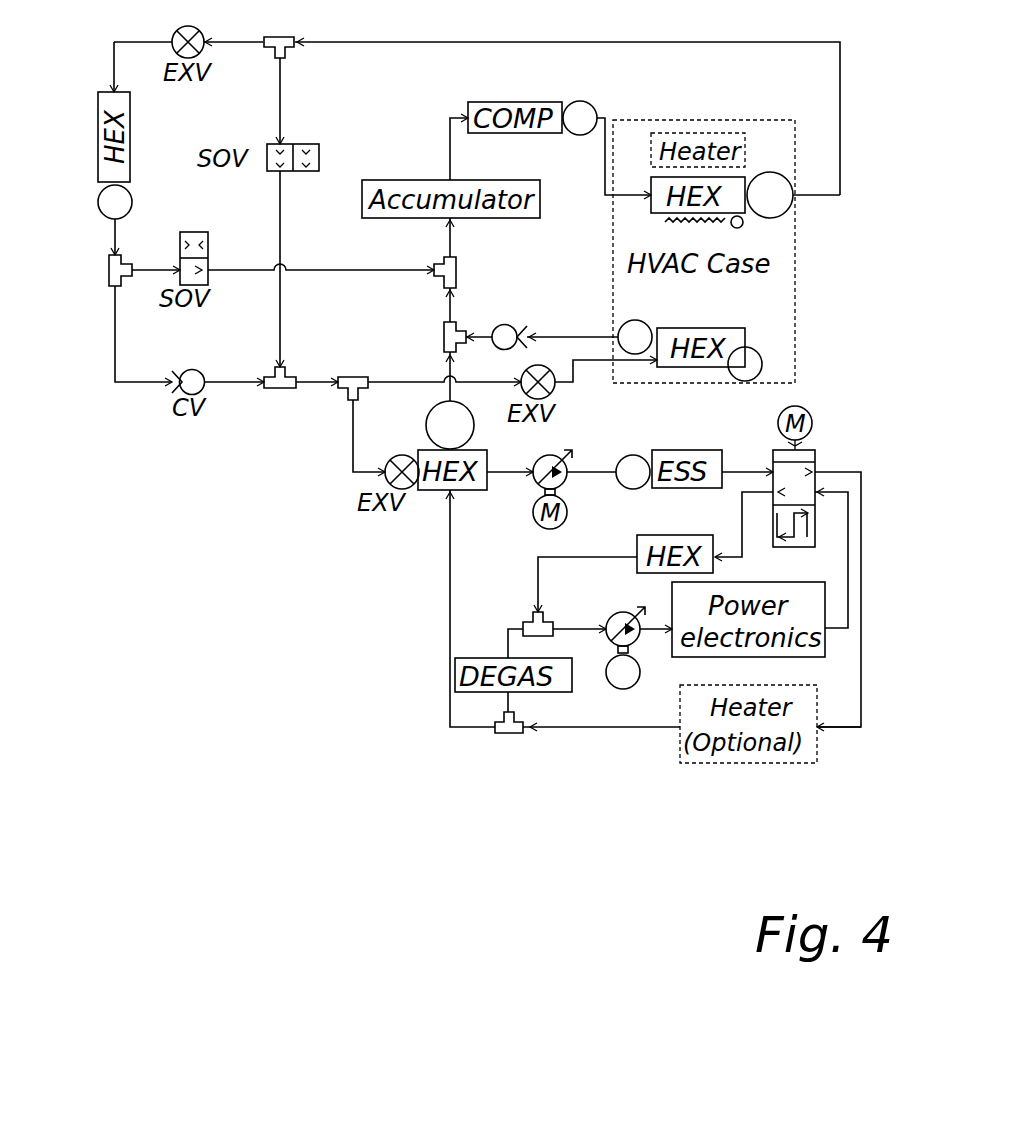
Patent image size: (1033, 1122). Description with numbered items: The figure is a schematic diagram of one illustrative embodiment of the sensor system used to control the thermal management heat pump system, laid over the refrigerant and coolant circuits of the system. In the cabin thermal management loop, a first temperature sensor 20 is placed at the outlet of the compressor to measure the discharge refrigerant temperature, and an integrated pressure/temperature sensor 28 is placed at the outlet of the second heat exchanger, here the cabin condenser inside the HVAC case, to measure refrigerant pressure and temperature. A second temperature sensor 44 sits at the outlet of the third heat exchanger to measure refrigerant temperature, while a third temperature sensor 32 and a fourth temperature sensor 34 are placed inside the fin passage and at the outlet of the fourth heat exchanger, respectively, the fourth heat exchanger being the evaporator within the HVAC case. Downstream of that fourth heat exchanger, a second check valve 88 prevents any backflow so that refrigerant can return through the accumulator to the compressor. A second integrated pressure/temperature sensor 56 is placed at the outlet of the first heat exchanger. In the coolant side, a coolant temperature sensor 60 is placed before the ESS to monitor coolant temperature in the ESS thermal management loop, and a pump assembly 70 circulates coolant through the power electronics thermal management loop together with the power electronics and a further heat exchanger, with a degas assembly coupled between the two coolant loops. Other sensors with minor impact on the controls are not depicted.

The first temperature sensor 20 is at (590, 104).
The integrated pressure/temperature sensor 28 is at (778, 216).
The third temperature sensor 32 is at (762, 356).
The fourth temperature sensor 34 is at (623, 323).
The second temperature sensor 44 is at (97, 198).
The second integrated pressure/temperature sensor 56 is at (432, 408).
The coolant temperature sensor 60 is at (633, 455).
The pump assembly 70 is at (612, 612).
The second check valve 88 is at (518, 326).